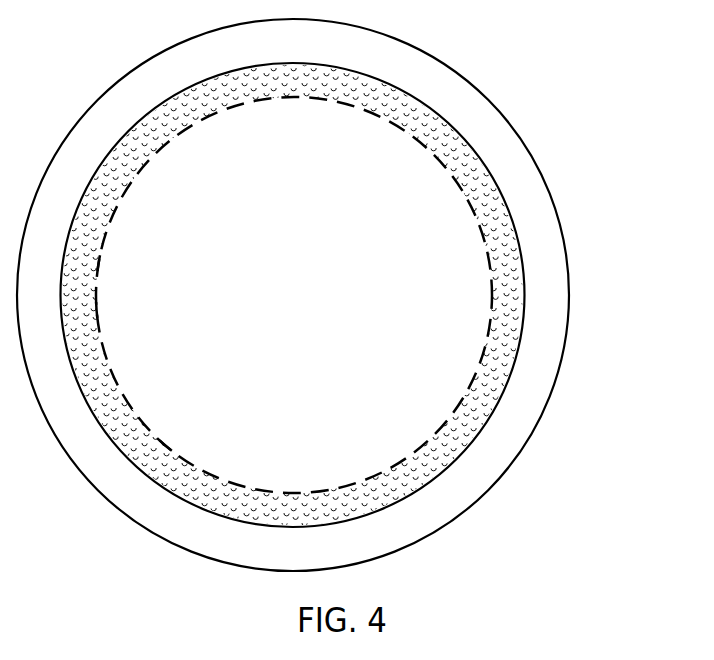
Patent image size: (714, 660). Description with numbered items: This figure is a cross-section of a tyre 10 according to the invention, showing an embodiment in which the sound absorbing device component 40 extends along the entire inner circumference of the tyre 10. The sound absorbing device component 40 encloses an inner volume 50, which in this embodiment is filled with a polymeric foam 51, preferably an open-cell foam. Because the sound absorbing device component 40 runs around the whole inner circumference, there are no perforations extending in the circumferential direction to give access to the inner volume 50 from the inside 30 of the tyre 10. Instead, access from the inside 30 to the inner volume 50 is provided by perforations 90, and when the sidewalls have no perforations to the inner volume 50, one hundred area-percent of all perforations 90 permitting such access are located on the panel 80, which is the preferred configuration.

The tyre 10 is at (527, 408).
The inside of the tyre 30 is at (478, 318).
The sound absorbing device component 40 is at (292, 101).
The inner volume 50 is at (102, 383).
The polymeric foam 51 is at (162, 450).
The panel 80 is at (98, 263).
The perforations 90 is at (97, 310).